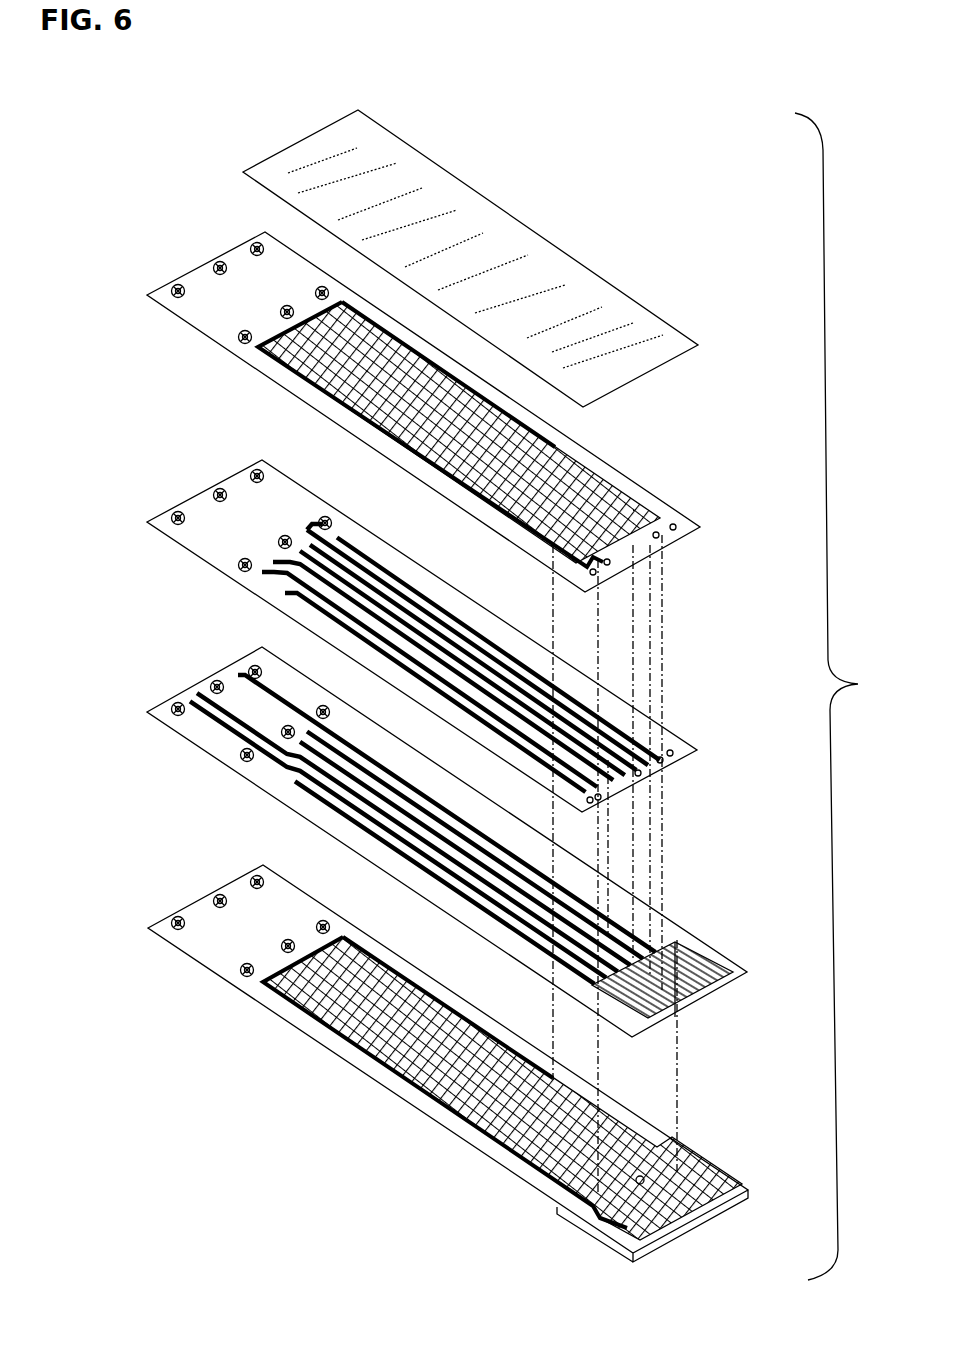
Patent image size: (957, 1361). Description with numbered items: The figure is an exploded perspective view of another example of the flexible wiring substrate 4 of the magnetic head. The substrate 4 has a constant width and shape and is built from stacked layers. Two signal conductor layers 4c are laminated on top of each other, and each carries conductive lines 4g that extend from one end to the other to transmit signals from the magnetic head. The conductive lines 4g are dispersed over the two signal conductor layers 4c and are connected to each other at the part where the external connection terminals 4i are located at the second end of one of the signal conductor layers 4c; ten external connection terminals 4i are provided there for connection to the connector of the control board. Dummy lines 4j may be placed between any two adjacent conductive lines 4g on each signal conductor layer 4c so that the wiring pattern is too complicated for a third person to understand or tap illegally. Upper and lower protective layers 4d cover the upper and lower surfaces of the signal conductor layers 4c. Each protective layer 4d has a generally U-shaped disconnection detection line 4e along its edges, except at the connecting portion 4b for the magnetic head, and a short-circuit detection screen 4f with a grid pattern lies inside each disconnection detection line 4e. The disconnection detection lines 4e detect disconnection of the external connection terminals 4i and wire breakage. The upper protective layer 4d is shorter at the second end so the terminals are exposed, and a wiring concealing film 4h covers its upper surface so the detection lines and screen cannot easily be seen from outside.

The flexible wiring substrate 4 is at (838, 696).
The connecting portion 4b is at (203, 277).
The signal conductor layer 4c is at (202, 545).
The protective layer 4d is at (265, 368).
The disconnection detection line 4e is at (305, 385).
The short-circuit detection screen 4f is at (615, 507).
The conductive line 4g is at (433, 603).
The wiring concealing film 4h is at (490, 238).
The external connection terminal 4i is at (720, 980).
The dummy line 4j is at (373, 563).